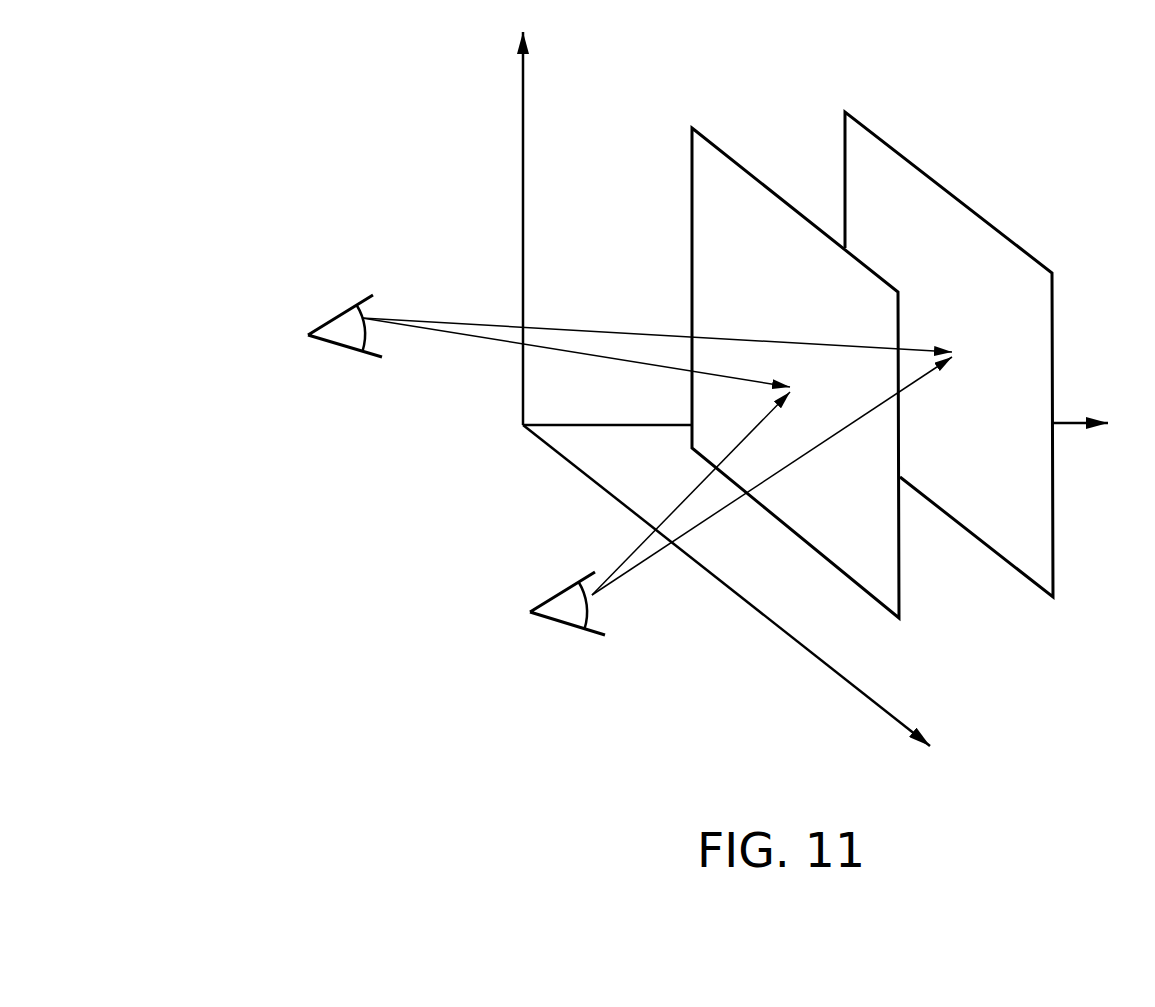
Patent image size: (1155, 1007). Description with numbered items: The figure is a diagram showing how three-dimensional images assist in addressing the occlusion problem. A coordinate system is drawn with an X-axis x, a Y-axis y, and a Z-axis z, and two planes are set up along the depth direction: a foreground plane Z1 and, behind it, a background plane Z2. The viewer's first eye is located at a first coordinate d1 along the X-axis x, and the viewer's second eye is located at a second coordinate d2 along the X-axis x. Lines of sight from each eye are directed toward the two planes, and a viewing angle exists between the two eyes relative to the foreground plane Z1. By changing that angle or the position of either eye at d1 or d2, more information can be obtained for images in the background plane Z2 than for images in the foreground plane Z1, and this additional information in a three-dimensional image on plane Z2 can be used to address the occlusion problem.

The foreground plane Z1 is at (820, 391).
The background plane Z2 is at (973, 378).
The first coordinate d1 is at (340, 308).
The second coordinate d2 is at (560, 590).
The X-axis x is at (738, 599).
The Y-axis y is at (504, 228).
The Z-axis z is at (826, 424).